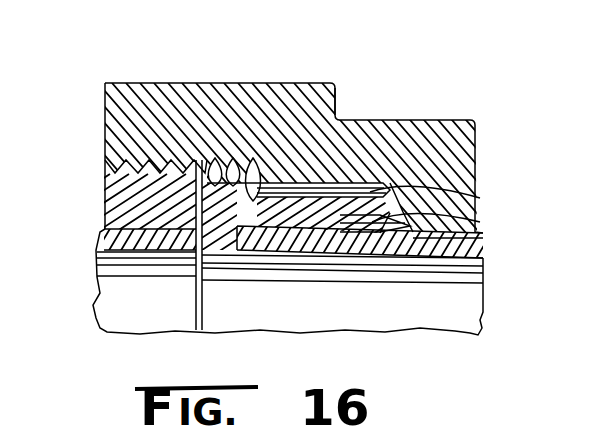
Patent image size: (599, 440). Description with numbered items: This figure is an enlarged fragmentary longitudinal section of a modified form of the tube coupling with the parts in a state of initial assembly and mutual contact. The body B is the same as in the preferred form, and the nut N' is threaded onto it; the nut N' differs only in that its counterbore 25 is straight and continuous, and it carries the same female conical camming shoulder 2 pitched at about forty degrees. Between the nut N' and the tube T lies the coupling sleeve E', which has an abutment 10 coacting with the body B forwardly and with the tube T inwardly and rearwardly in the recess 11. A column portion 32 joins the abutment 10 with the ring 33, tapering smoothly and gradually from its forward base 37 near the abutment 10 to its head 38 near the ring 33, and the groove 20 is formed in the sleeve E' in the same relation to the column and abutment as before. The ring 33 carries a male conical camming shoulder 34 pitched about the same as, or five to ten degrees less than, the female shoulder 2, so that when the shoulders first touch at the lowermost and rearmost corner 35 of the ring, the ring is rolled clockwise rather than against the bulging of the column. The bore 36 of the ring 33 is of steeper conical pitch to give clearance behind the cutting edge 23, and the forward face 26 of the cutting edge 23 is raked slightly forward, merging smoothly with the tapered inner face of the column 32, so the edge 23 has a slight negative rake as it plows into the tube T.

The nut N' is at (299, 154).
The body B is at (127, 197).
The abutment 10 is at (135, 233).
The recess 11 is at (192, 262).
The forward base of the column 37 is at (237, 228).
The groove 20 is at (262, 200).
The coupling sleeve E' is at (311, 112).
The counterbore 25 is at (355, 208).
The head of the column 38 is at (368, 208).
The ring 33 is at (397, 208).
The forward face of the cutting edge 26 is at (352, 213).
The column portion 32 is at (257, 233).
The cutting edge 23 is at (323, 227).
The male conical camming shoulder 34 is at (360, 220).
The female conical camming shoulder 2 is at (476, 195).
The lowermost and rearmost corner of the ring 35 is at (480, 216).
The bore of the ring 36 is at (483, 238).
The tube T is at (427, 303).